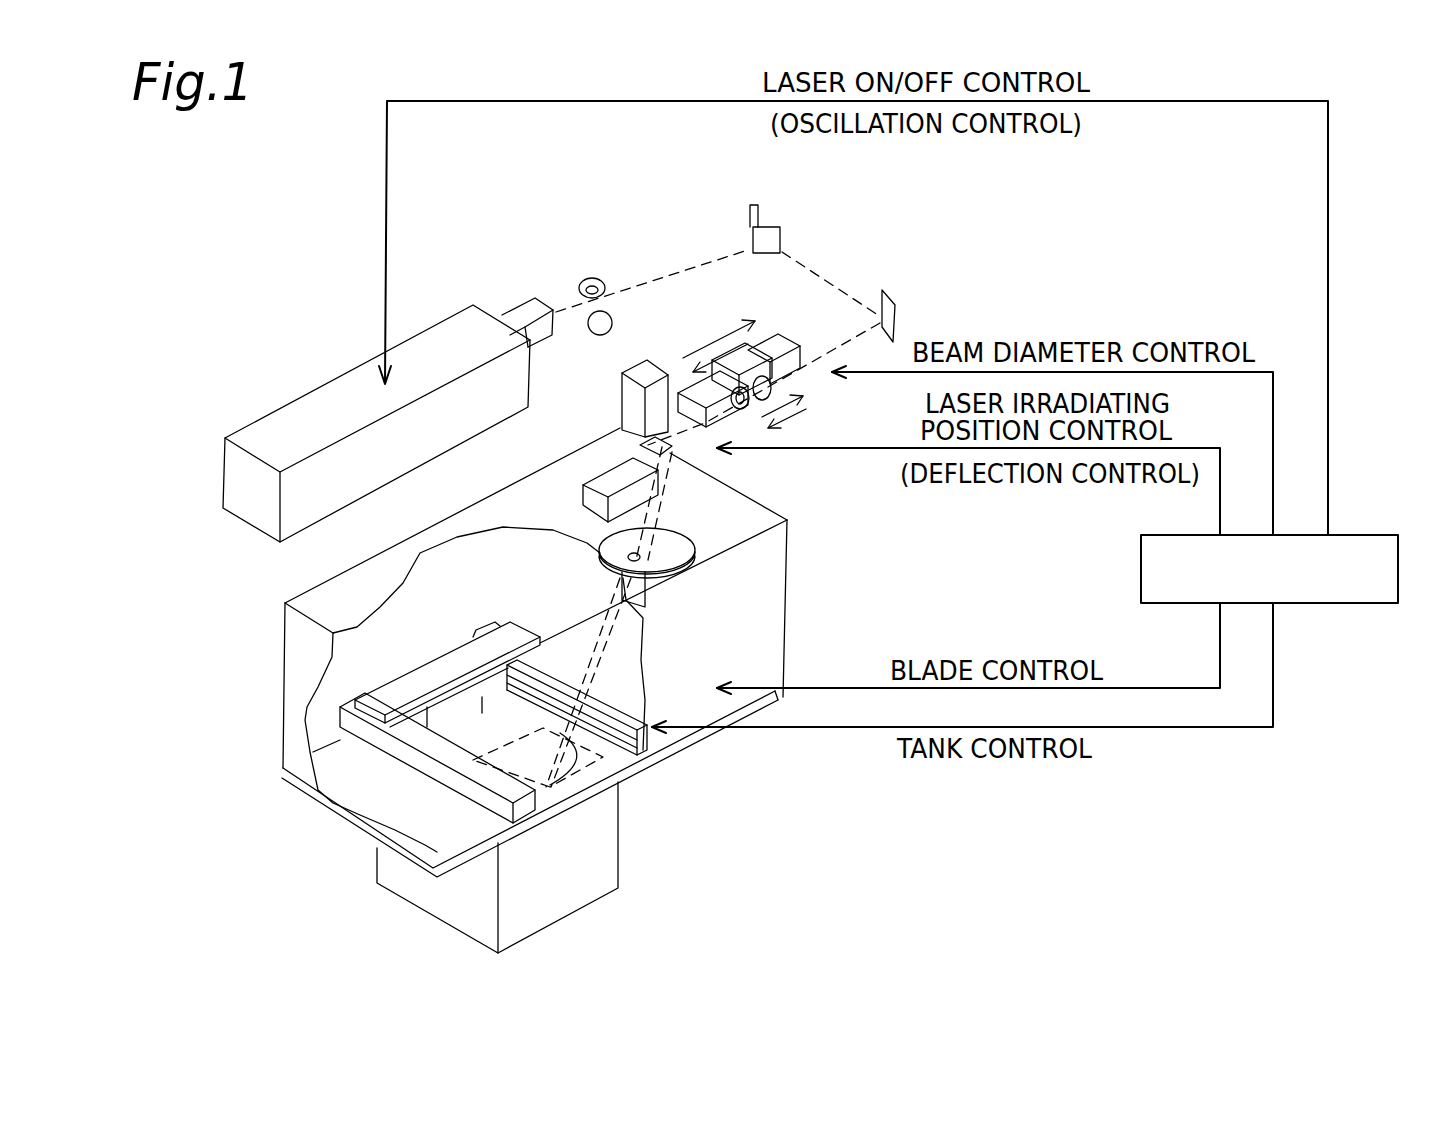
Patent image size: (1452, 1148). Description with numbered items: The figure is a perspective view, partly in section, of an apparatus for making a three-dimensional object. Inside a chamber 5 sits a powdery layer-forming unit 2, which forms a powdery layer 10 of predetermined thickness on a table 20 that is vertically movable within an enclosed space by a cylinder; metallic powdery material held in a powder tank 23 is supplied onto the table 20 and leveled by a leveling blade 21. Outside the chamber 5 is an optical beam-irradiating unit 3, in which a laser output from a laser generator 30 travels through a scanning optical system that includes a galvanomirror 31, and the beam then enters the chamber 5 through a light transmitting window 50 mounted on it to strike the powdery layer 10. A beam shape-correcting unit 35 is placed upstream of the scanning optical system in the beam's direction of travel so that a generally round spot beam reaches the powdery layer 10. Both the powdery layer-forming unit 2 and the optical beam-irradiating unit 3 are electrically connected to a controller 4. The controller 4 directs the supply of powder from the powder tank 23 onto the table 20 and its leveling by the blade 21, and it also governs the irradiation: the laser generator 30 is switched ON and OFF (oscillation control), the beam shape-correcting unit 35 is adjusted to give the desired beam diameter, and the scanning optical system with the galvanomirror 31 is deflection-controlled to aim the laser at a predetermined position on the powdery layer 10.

The laser generator 30 is at (450, 327).
The optical beam-irradiating unit 3 is at (615, 245).
The beam shape-correcting unit 35 is at (785, 327).
The galvanomirror 31 is at (617, 477).
The light transmitting window 50 is at (678, 542).
The chamber 5 is at (790, 537).
The leveling blade 21 is at (455, 705).
The powder tank 23 is at (458, 752).
The powdery layer 10 is at (647, 765).
The table 20 is at (563, 790).
The powdery layer-forming unit 2 is at (562, 803).
The controller 4 is at (1378, 534).